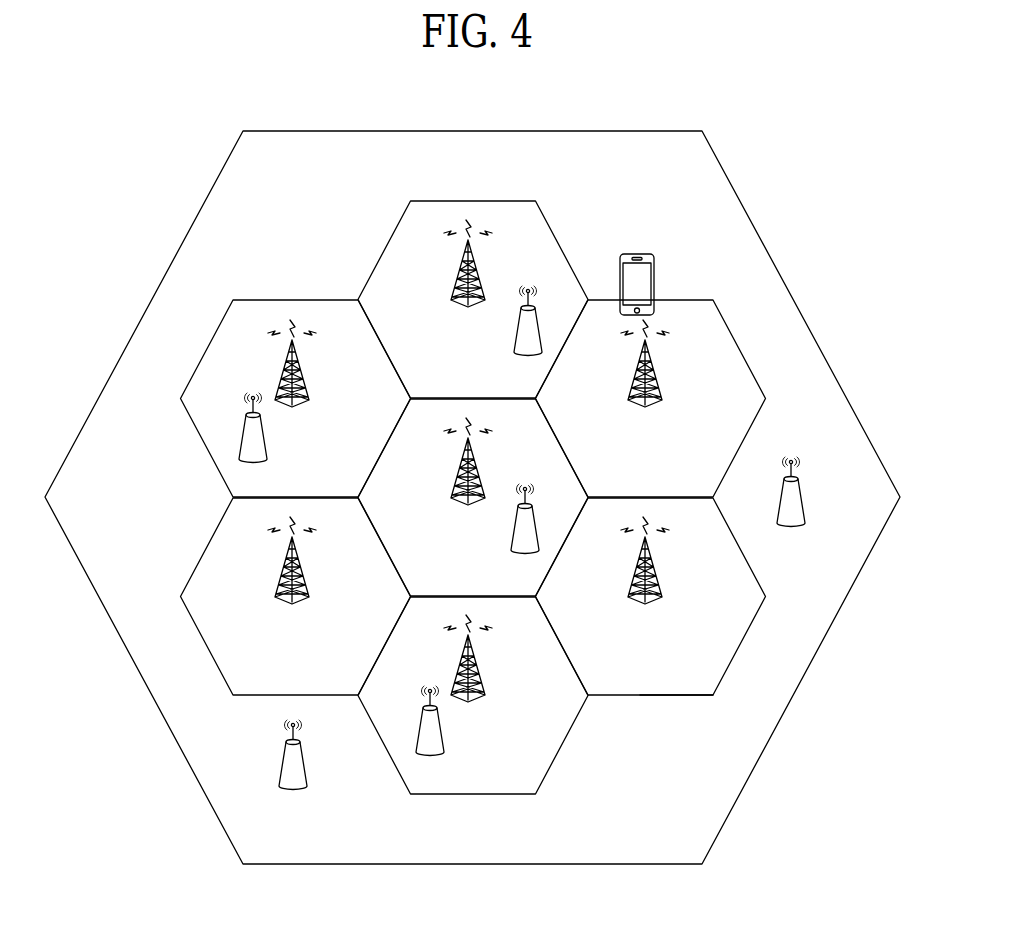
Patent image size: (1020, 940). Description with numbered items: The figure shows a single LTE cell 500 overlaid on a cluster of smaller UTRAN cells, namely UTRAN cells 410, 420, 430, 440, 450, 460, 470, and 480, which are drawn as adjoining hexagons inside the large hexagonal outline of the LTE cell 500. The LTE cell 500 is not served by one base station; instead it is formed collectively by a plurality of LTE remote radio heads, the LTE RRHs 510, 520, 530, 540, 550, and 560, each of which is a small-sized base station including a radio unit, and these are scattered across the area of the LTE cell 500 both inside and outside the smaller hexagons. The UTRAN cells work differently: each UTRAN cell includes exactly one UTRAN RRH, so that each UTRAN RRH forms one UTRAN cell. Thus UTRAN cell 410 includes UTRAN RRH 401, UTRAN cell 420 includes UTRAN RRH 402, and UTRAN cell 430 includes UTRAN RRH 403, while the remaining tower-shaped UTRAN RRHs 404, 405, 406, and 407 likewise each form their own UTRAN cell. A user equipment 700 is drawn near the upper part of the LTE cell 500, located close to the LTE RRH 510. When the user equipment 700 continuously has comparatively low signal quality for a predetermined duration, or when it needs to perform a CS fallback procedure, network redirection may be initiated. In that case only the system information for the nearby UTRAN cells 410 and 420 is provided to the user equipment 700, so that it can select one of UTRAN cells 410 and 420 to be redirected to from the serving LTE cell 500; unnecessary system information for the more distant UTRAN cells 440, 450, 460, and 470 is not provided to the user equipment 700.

The LTE cell 500 is at (737, 180).
The UTRAN cell 410 is at (505, 201).
The UTRAN cell 420 is at (695, 299).
The UTRAN cell 430 is at (547, 575).
The UTRAN cell 440 is at (298, 299).
The UTRAN cell 450 is at (208, 543).
The UTRAN cell 460 is at (747, 563).
The UTRAN cell 470 is at (677, 695).
The UTRAN cell 480 is at (462, 794).
The UTRAN RRH 401 is at (477, 275).
The UTRAN RRH 402 is at (655, 373).
The UTRAN RRH 403 is at (453, 478).
The UTRAN RRH 404 is at (303, 375).
The UTRAN RRH 405 is at (308, 583).
The UTRAN RRH 406 is at (660, 577).
The UTRAN RRH 407 is at (483, 673).
The LTE RRH 510 is at (537, 318).
The LTE RRH 520 is at (802, 492).
The LTE RRH 530 is at (513, 530).
The LTE RRH 540 is at (443, 733).
The LTE RRH 550 is at (307, 768).
The LTE RRH 560 is at (270, 428).
The user equipment 700 is at (640, 254).